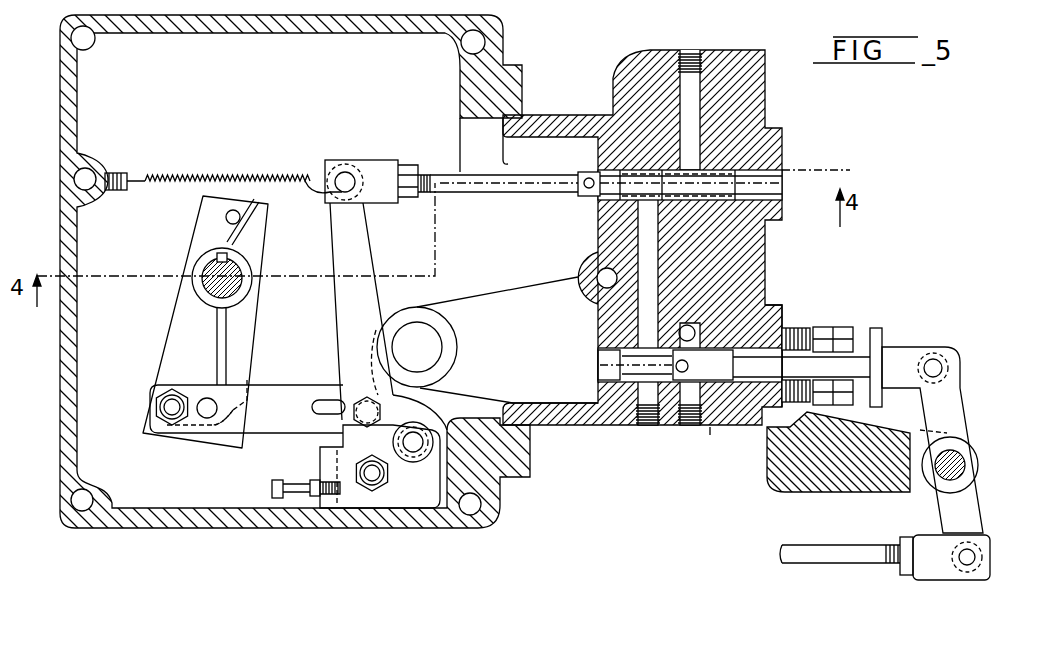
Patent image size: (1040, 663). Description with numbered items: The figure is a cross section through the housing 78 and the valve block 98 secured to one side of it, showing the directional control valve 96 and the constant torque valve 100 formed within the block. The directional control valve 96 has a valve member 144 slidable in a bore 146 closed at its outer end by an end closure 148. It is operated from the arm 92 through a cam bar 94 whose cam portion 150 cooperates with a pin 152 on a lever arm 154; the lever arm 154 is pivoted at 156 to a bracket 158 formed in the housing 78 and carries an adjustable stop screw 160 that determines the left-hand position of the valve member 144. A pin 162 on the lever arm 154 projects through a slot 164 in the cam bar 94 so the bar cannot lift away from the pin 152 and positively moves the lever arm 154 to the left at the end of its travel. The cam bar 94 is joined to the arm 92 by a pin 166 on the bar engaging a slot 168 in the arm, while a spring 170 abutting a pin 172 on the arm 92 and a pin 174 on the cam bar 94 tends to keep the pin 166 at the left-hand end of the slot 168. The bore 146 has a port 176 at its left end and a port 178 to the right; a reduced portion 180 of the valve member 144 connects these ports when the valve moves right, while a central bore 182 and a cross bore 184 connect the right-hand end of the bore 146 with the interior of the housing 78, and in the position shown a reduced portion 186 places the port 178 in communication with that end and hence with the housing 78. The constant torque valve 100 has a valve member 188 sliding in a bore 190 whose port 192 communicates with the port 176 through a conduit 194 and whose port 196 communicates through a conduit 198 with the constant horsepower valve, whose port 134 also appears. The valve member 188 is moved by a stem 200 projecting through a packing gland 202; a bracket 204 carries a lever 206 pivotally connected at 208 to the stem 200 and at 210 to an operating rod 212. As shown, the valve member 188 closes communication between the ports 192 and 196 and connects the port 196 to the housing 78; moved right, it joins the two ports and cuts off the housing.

The housing 78 is at (566, 487).
The arm 92 is at (248, 320).
The cam bar 94 is at (302, 425).
The directional control valve 96 is at (700, 167).
The valve block 98 is at (745, 258).
The constant torque valve 100 is at (722, 451).
The port 134 is at (604, 276).
The valve member 144 is at (840, 187).
The bore 146 is at (782, 143).
The end closure 148 is at (782, 150).
The cam portion 150 is at (411, 455).
The pin 152 is at (420, 438).
The lever arm 154 is at (364, 250).
The pivot 156 is at (370, 487).
The bracket 158 is at (395, 505).
The adjustable stop screw 160 is at (272, 490).
The pin 162 is at (365, 400).
The slot 164 is at (325, 405).
The pin 166 is at (162, 406).
The slot 168 is at (236, 408).
The spring 170 is at (200, 279).
The pin 172 is at (240, 217).
The pin 174 is at (206, 399).
The port 176 is at (655, 213).
The port 178 is at (692, 103).
The reduced portion 180 is at (633, 173).
The bore 182 is at (831, 170).
The cross bore 184 is at (586, 180).
The reduced portion 186 is at (726, 200).
The valve member 188 is at (597, 367).
The bore 190 is at (735, 427).
The port 192 is at (640, 352).
The conduit 194 is at (594, 300).
The port 196 is at (692, 333).
The conduit 198 is at (772, 306).
The stem 200 is at (825, 368).
The packing gland 202 is at (800, 340).
The bracket 204 is at (850, 475).
The lever 206 is at (947, 405).
The pivotal connection 208 is at (945, 368).
The pivotal connection 210 is at (967, 562).
The operating rod 212 is at (840, 558).